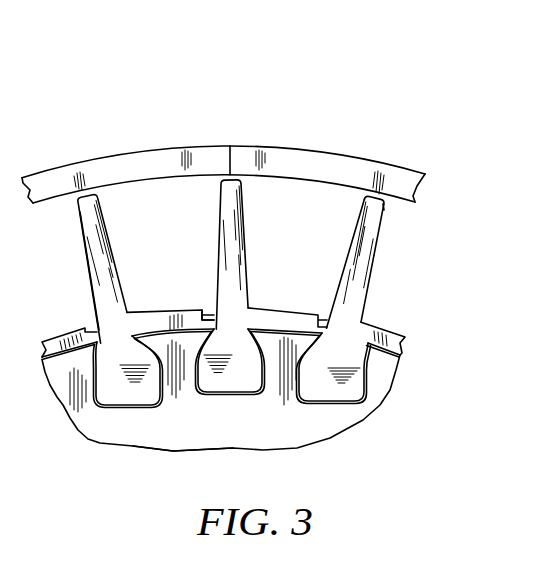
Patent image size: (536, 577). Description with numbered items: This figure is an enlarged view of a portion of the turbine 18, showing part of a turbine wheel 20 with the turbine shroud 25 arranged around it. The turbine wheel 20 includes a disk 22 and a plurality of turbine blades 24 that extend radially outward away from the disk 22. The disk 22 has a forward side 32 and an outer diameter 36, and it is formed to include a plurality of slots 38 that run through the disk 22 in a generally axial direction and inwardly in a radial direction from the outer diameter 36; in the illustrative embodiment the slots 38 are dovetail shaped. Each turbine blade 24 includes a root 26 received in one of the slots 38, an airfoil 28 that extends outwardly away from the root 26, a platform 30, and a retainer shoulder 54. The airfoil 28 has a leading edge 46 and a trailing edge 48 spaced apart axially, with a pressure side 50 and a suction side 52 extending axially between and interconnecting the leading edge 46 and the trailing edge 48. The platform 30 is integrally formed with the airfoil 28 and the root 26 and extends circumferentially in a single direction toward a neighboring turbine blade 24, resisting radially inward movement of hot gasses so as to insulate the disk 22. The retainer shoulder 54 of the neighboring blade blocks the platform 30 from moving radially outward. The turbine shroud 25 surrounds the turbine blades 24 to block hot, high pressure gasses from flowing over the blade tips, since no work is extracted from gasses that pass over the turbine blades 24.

The turbine 18 is at (244, 112).
The turbine shroud 25 is at (167, 142).
The pressure side 50 is at (105, 240).
The suction side 52 is at (84, 268).
The turbine wheel 20 is at (171, 246).
The platform 30 is at (269, 304).
The retainer shoulder 54 is at (208, 307).
The leading edge 46 is at (368, 254).
The trailing edge 48 is at (362, 213).
The airfoil 28 is at (375, 292).
The turbine blade 24 is at (395, 209).
The disk 22 is at (251, 426).
The root 26 is at (343, 386).
The forward side 32 is at (173, 437).
The slots 38 is at (108, 408).
The outer diameter 36 is at (53, 341).